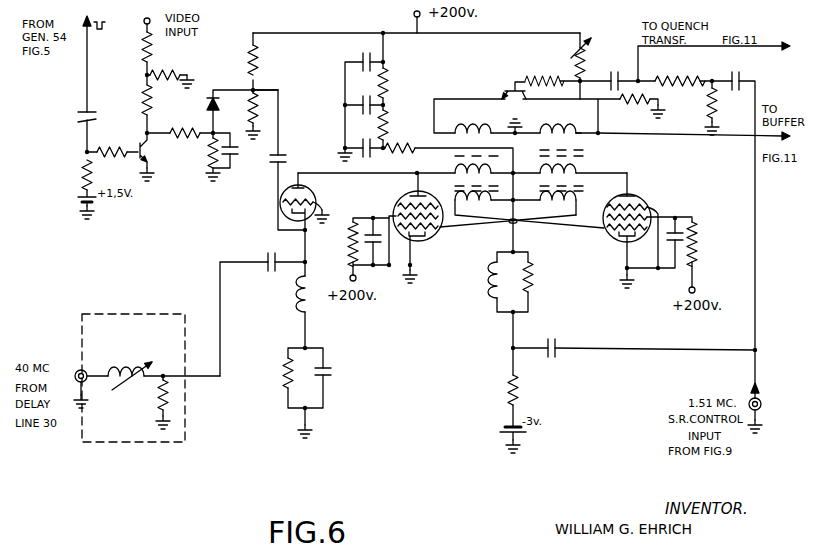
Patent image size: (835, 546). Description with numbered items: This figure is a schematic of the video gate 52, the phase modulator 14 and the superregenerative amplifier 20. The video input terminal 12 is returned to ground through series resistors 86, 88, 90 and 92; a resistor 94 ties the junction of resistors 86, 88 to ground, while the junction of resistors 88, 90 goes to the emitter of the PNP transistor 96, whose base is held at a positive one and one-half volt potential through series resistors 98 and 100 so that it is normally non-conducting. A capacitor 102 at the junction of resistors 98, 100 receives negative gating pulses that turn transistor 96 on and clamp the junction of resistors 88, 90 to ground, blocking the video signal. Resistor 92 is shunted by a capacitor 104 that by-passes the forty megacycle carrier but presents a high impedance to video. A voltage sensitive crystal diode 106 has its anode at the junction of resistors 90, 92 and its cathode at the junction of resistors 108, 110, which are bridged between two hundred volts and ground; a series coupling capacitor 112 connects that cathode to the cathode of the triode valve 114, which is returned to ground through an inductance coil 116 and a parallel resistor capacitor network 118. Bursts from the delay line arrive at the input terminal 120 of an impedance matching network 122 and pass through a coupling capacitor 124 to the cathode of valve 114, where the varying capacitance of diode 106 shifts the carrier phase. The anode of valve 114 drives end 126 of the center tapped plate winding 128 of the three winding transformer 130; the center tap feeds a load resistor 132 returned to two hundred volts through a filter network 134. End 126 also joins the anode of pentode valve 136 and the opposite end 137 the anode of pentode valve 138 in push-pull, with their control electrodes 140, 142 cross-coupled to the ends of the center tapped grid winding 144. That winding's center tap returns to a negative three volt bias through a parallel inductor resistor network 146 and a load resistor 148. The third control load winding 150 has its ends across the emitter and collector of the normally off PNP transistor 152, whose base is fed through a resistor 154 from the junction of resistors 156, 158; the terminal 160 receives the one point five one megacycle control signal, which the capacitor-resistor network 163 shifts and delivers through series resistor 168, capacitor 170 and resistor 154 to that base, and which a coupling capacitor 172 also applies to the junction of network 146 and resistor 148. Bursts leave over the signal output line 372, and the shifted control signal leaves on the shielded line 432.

The video input terminal 12 is at (147, 16).
The phase modulator 14 is at (254, 214).
The superregenerative amplifier 20 is at (497, 63).
The video gate 52 is at (130, 108).
The series resistor 86 is at (154, 51).
The series resistor 88 is at (155, 107).
The series resistor 90 is at (187, 138).
The series resistor 92 is at (208, 163).
The resistor 94 is at (182, 72).
The transistor 96 is at (140, 147).
The series resistor 98 is at (107, 155).
The series resistor 100 is at (80, 163).
The capacitor 102 is at (80, 127).
The capacitor 104 is at (235, 152).
The voltage sensitive crystal diode 106 is at (208, 102).
The resistor 108 is at (262, 48).
The resistor 110 is at (267, 114).
The series coupling capacitor 112 is at (280, 155).
The triode valve 114 is at (316, 193).
The inductance coil 116 is at (312, 315).
The parallel resistor capacitor network 118 is at (325, 393).
The input terminal 120 is at (80, 372).
The impedance matching network 122 is at (148, 320).
The coupling capacitor 124 is at (273, 263).
The end of plate winding 126 is at (443, 167).
The center tapped plate winding 128 is at (580, 165).
The three winding transformer 130 is at (519, 140).
The load resistor 132 is at (402, 144).
The filter network 134 is at (388, 72).
The pentode valve 136 is at (428, 242).
The opposite end of plate winding 137 is at (617, 173).
The pentode valve 138 is at (613, 240).
The control electrode 140 is at (442, 227).
The control electrode 142 is at (602, 230).
The center tapped grid winding 144 is at (580, 197).
The parallel inductor resistor network 146 is at (531, 300).
The load resistor 148 is at (523, 390).
The third control load winding 150 is at (555, 113).
The transistor 152 is at (508, 83).
The resistor 154 is at (548, 75).
The resistor 156 is at (592, 53).
The resistor 158 is at (633, 102).
The terminal 160 is at (759, 402).
The capacitor-resistor network 163 is at (715, 88).
The series resistor 168 is at (673, 73).
The capacitor 170 is at (612, 76).
The coupling capacitor 172 is at (562, 342).
The signal output line 372 is at (725, 140).
The shielded line 432 is at (766, 50).